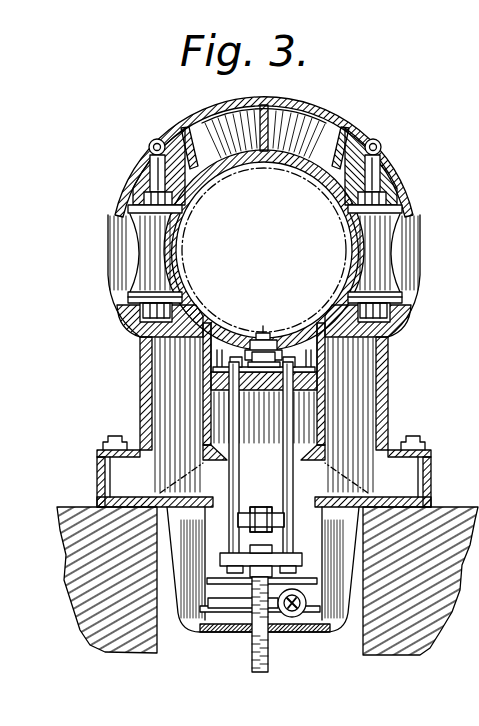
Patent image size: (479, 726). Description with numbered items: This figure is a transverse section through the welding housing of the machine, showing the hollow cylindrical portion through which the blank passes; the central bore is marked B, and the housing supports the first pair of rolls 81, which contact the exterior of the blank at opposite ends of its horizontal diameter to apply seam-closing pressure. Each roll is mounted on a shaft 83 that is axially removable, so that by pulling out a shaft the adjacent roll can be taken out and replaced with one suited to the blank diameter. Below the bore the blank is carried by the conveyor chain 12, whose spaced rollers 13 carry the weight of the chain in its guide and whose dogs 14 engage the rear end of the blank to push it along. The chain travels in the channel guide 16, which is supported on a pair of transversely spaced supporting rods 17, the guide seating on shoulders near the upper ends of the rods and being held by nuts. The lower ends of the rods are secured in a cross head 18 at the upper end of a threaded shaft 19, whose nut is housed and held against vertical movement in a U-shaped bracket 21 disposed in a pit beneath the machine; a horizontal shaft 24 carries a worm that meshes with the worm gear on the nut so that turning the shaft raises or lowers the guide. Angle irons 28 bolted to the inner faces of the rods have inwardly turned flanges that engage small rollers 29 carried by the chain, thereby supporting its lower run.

The bore B is at (295, 173).
The first pair of rolls 81 is at (348, 243).
The shafts 83 is at (152, 174).
The channel guide 16 is at (203, 357).
The chain 12 is at (278, 358).
The dogs 14 is at (263, 337).
The supporting rods 17 is at (283, 475).
The rollers 13 is at (259, 507).
The small rollers 29 is at (283, 517).
The angle irons 28 is at (240, 522).
The cross head 18 is at (228, 560).
The threaded shaft 19 is at (252, 658).
The shaft 24 is at (294, 617).
The U-shaped bracket 21 is at (322, 631).